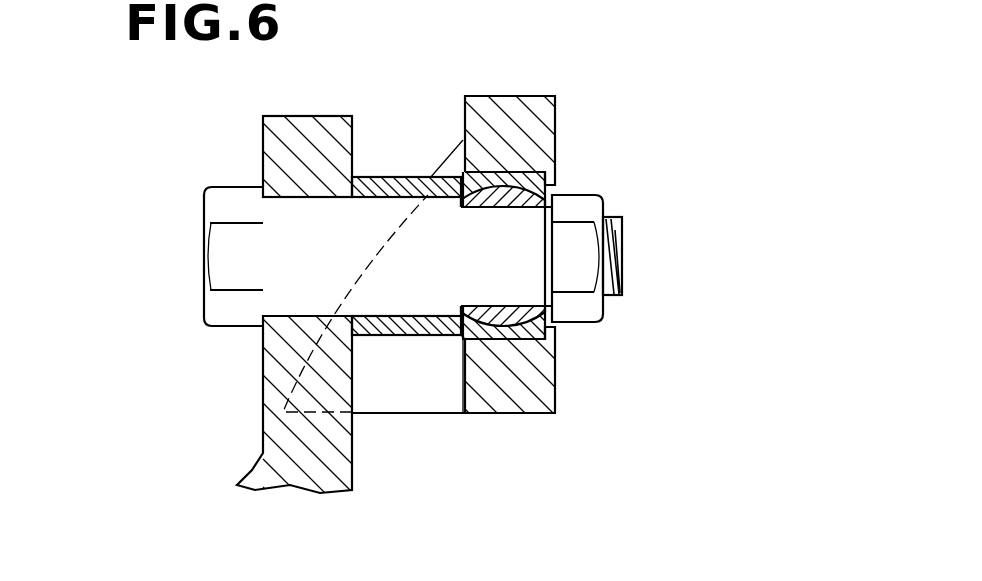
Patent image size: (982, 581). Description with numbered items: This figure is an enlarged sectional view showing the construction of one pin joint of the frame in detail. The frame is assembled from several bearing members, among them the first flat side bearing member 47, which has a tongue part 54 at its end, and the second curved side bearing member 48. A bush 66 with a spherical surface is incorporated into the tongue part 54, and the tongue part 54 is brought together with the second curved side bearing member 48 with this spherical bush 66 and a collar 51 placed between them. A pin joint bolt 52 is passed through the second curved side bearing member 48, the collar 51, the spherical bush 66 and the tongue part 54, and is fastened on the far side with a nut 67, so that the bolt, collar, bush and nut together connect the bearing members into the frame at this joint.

The first flat side bearing member 47 is at (417, 398).
The second curved side bearing member 48 is at (253, 463).
The collar 51 is at (403, 187).
The pin joint bolt 52 is at (203, 262).
The tongue part 54 is at (513, 403).
The bush 66 is at (506, 195).
The nut 67 is at (586, 323).